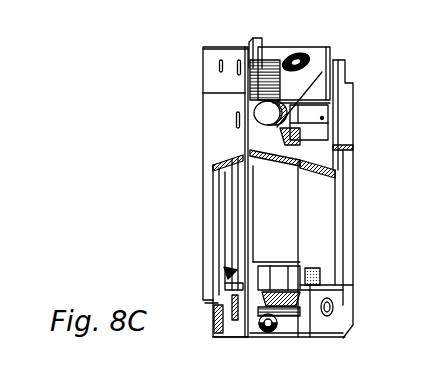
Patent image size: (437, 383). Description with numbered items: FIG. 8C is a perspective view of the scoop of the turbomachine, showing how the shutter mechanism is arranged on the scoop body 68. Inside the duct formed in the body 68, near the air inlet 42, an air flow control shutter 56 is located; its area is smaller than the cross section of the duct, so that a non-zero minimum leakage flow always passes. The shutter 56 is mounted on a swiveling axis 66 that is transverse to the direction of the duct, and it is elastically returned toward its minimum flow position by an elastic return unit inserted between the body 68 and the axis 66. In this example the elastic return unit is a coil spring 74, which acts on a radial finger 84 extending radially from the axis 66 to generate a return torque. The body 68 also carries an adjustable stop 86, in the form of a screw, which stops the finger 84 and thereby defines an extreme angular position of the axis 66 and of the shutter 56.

The air inlet 42 is at (224, 258).
The air flow control shutter 56 is at (235, 204).
The swiveling axis 66 is at (251, 46).
The body 68 is at (332, 240).
The coil spring 74 is at (246, 93).
The radial finger 84 is at (318, 125).
The adjustable stop 86 is at (352, 87).